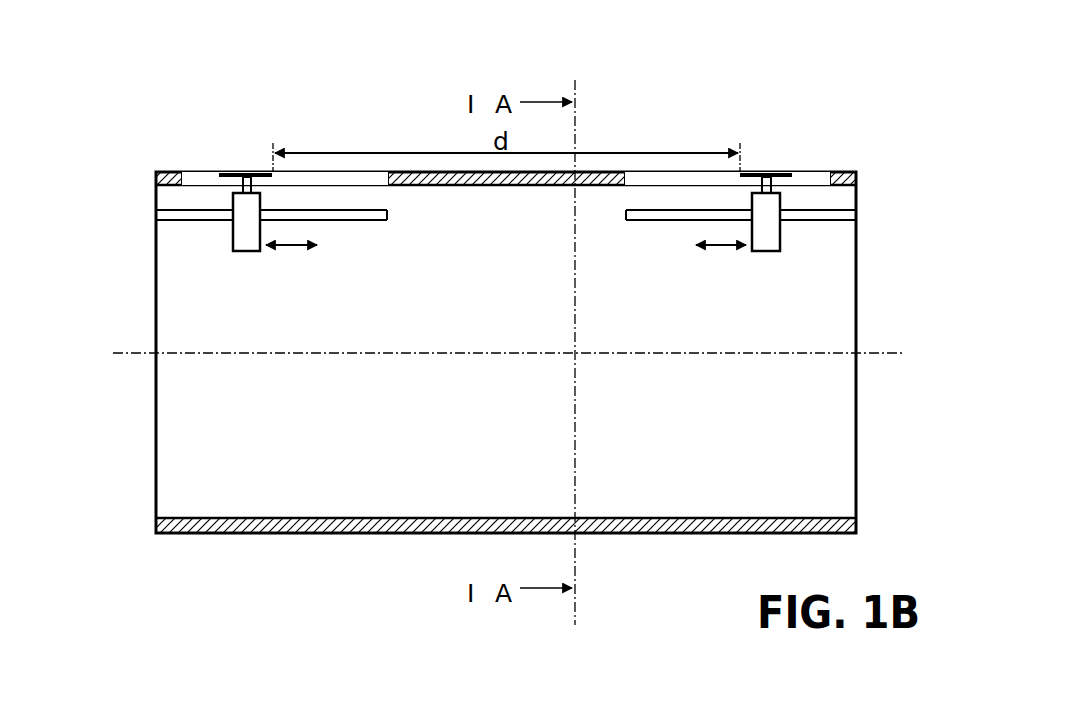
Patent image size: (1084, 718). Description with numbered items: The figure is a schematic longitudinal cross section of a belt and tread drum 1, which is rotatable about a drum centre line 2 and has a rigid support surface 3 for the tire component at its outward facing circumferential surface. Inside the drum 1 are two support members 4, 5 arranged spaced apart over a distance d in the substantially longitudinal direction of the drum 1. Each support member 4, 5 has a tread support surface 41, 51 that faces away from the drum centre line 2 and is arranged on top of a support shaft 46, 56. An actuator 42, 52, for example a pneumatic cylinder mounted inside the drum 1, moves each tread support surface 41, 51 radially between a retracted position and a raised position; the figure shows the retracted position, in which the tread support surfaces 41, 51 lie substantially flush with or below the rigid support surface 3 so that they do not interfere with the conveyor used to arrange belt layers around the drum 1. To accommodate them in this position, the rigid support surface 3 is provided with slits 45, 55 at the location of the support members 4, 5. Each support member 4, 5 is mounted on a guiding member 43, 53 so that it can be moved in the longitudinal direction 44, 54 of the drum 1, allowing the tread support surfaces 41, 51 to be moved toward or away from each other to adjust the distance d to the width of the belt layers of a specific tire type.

The belt and tread drum 1 is at (157, 112).
The drum centre line 2 is at (520, 353).
The rigid support surface 3 is at (603, 172).
The support member 4 is at (290, 211).
The tread support surface 41 is at (251, 173).
The actuator 42 is at (238, 240).
The guiding member 43 is at (383, 221).
The longitudinal direction 44 is at (288, 248).
The slit 45 is at (334, 179).
The support shaft 46 is at (238, 190).
The support member 5 is at (768, 210).
The tread support surface 51 is at (768, 173).
The actuator 52 is at (772, 240).
The guiding member 53 is at (648, 221).
The longitudinal direction 54 is at (713, 247).
The slit 55 is at (812, 178).
The support shaft 56 is at (773, 190).